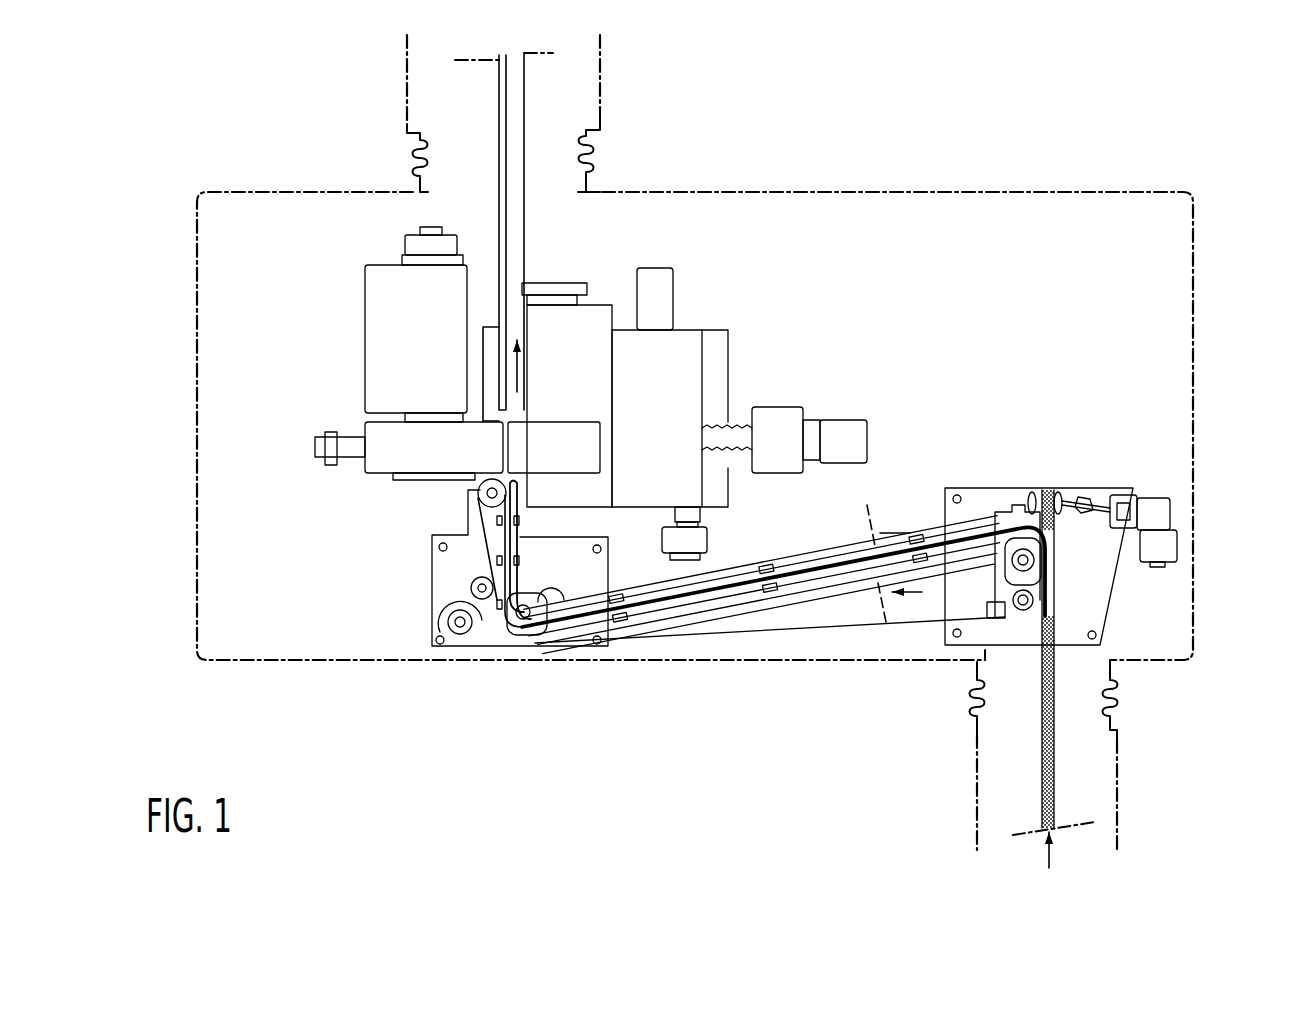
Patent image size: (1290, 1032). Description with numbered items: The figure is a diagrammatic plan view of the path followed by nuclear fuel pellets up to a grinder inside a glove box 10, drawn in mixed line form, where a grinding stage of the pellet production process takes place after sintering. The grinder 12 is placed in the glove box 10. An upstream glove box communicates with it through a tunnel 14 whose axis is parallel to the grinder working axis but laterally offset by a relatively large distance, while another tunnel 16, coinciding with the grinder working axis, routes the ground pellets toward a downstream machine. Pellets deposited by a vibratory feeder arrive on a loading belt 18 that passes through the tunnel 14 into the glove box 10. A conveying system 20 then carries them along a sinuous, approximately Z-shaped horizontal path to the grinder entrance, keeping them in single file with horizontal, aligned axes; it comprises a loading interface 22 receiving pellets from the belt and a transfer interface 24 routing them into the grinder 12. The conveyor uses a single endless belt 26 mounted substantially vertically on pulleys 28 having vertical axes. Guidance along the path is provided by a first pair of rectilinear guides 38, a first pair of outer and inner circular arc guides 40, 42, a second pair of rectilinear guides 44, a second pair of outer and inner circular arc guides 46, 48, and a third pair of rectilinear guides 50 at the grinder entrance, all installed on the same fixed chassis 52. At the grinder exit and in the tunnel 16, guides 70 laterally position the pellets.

The glove box 10 is at (1197, 222).
The grinder 12 is at (520, 466).
The tunnel 14 is at (1126, 814).
The tunnel 16 is at (404, 70).
The loading belt 18 is at (1056, 746).
The conveying system 20 is at (783, 562).
The loading interface 22 is at (1075, 573).
The transfer interface 24 is at (459, 495).
The endless belt 26 is at (722, 600).
The pulleys 28 is at (491, 477).
The first pair of rectilinear guides 38 is at (1053, 626).
The outer circular arc guide 40 is at (1058, 534).
The inner circular arc guide 42 is at (1000, 535).
The second pair of rectilinear guides 44 is at (838, 567).
The outer circular arc guide 46 is at (545, 632).
The inner circular arc guide 48 is at (572, 620).
The third pair of rectilinear guides 50 is at (520, 500).
The fixed chassis 52 is at (430, 616).
The guides 70 is at (519, 98).